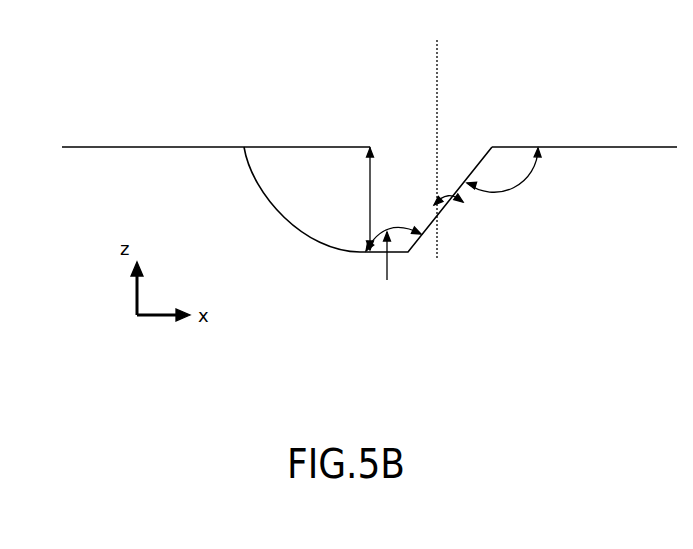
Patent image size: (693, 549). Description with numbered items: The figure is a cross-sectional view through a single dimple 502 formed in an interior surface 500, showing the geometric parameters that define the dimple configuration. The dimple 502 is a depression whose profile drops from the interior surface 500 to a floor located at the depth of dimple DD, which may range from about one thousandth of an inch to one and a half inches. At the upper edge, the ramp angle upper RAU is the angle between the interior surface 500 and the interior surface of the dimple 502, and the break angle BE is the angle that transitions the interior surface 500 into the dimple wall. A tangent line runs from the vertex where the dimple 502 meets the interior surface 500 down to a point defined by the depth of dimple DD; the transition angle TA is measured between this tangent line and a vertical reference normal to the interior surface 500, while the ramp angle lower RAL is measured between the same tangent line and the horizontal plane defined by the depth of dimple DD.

The interior surface 500 is at (165, 147).
The dimple 502 is at (280, 182).
The depth of dimple DD is at (339, 198).
The transition angle TA is at (447, 187).
The break angle BE is at (512, 146).
The ramp angle upper RAU is at (539, 183).
The ramp angle lower RAL is at (396, 275).